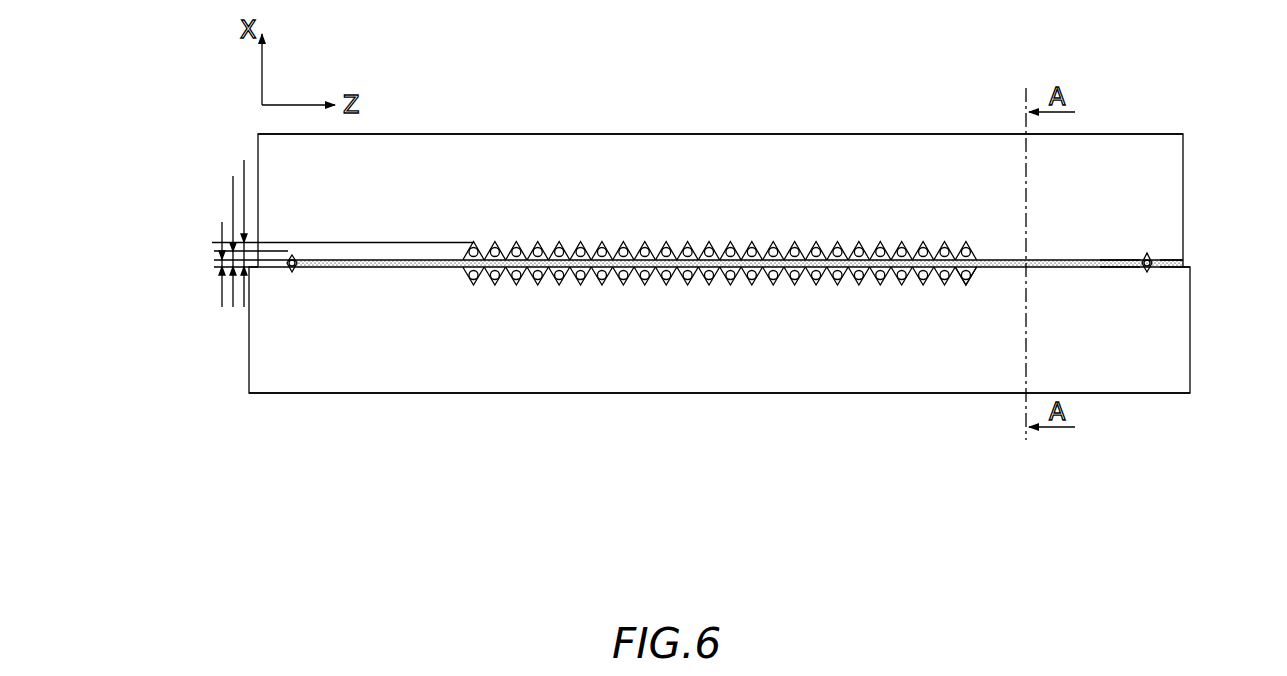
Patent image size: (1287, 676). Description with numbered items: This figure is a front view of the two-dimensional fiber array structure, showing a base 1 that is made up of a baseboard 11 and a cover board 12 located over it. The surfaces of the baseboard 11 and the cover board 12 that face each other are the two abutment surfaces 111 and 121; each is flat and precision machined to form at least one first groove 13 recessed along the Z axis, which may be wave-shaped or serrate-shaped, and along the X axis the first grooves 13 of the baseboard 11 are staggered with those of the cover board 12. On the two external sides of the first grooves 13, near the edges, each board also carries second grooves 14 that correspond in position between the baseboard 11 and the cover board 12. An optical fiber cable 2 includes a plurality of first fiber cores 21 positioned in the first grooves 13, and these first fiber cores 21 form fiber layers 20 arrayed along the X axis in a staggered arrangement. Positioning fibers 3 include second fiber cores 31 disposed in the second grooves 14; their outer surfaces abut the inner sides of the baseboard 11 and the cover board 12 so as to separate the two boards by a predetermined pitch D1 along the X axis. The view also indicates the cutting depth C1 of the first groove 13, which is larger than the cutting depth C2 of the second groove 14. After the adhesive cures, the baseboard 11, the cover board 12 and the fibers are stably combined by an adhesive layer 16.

The base 1 is at (762, 277).
The optical fiber cable 2 is at (720, 403).
The positioning fibers 3 is at (187, 327).
The baseboard 11 is at (1165, 343).
The cover board 12 is at (1153, 208).
The first groove 13 is at (966, 278).
The second groove 14 is at (1143, 268).
The adhesive layer 16 is at (1120, 266).
The fiber layer 20 is at (572, 287).
The first fiber core 21 is at (685, 276).
The second fiber core 31 is at (293, 273).
The abutment surface 111 is at (1187, 263).
The abutment surface 121 is at (1165, 266).
The cutting depth of the first groove C1 is at (245, 165).
The cutting depth of the second groove C2 is at (233, 192).
The predetermined pitch D1 is at (222, 290).